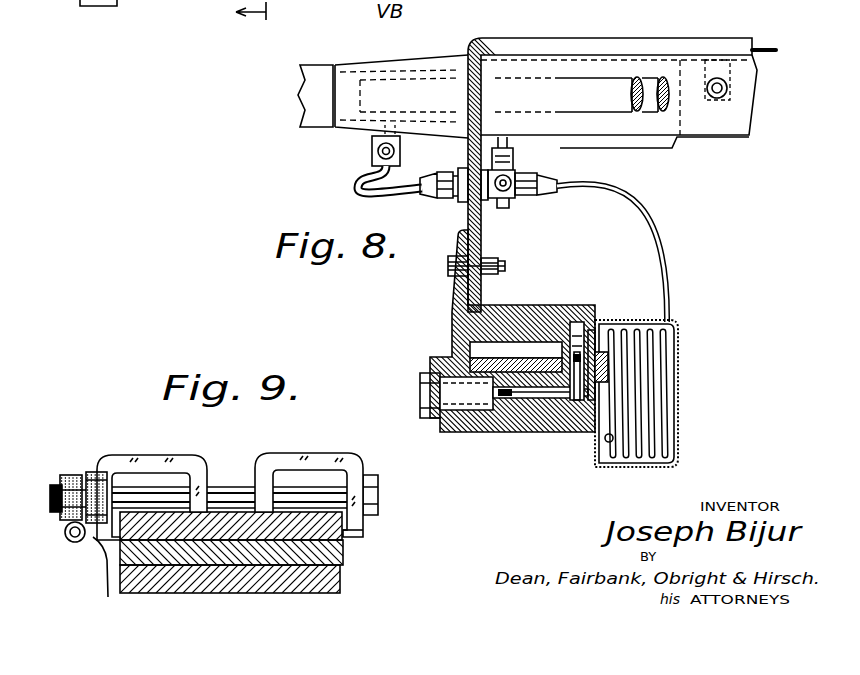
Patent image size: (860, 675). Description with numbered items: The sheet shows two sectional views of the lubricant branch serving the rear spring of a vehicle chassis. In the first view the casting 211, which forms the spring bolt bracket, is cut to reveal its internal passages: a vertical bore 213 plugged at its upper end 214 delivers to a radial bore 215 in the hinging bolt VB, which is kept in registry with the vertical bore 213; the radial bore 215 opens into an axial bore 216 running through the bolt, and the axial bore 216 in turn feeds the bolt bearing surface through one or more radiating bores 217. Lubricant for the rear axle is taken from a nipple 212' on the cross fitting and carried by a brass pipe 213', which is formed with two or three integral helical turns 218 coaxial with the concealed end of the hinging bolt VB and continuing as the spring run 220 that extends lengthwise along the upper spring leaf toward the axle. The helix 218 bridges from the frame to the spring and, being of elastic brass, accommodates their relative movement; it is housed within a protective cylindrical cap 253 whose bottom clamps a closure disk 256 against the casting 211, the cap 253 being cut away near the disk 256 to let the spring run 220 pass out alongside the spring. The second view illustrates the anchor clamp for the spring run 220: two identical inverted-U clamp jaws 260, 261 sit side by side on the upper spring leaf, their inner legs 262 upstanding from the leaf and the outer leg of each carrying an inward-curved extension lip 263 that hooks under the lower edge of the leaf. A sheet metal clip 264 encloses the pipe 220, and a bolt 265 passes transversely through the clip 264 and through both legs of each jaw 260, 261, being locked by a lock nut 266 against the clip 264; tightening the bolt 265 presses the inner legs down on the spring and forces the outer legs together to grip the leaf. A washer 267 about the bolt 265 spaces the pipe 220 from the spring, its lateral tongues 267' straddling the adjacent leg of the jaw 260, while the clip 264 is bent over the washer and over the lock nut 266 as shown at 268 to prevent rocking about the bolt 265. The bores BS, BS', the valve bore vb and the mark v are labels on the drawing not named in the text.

In FIG. 8, the casting 211 is at (490, 328).
In FIG. 8, the nipple 212' is at (519, 185).
In FIG. 8, the vertical bore 213 is at (616, 343).
In FIG. 8, the pipe 213' is at (627, 253).
In FIG. 8, the upper end plug 214 is at (578, 322).
In FIG. 8, the radial bore 215 is at (578, 398).
In FIG. 8, the axial bore 216 is at (541, 399).
In FIG. 8, the radiating bores 217 is at (506, 398).
In FIG. 8, the helical turns 218 is at (664, 358).
In FIG. 8, the protective cylindrical cap 253 is at (674, 380).
In FIG. 8, the closure disk 256 is at (640, 332).
In FIG. 8, the hinging bolt VB is at (455, 386).
In FIG. 8, the valve bore vb is at (566, 402).
In FIG. 8, the bore BS is at (619, 76).
In FIG. 8, the bore branch BS' is at (670, 59).
In FIG. 9, the clamp jaw 260 is at (158, 462).
In FIG. 9, the clamp jaw 261 is at (327, 458).
In FIG. 9, the inner legs 262 is at (268, 478).
In FIG. 9, the extension lip 263 is at (357, 534).
In FIG. 8, the sheet metal clip 264 is at (222, 22).
In FIG. 9, the sheet metal clip 264 is at (101, 552).
In FIG. 9, the bolt 265 is at (233, 497).
In FIG. 9, the lock nut 266 is at (65, 487).
In FIG. 9, the washer 267 is at (96, 464).
In FIG. 9, the lateral tongues 267' is at (116, 579).
In FIG. 9, the bent-over portion 268 is at (73, 475).
In FIG. 9, the spring run 220 is at (75, 543).
In FIG. 9, the plate section v is at (313, 540).